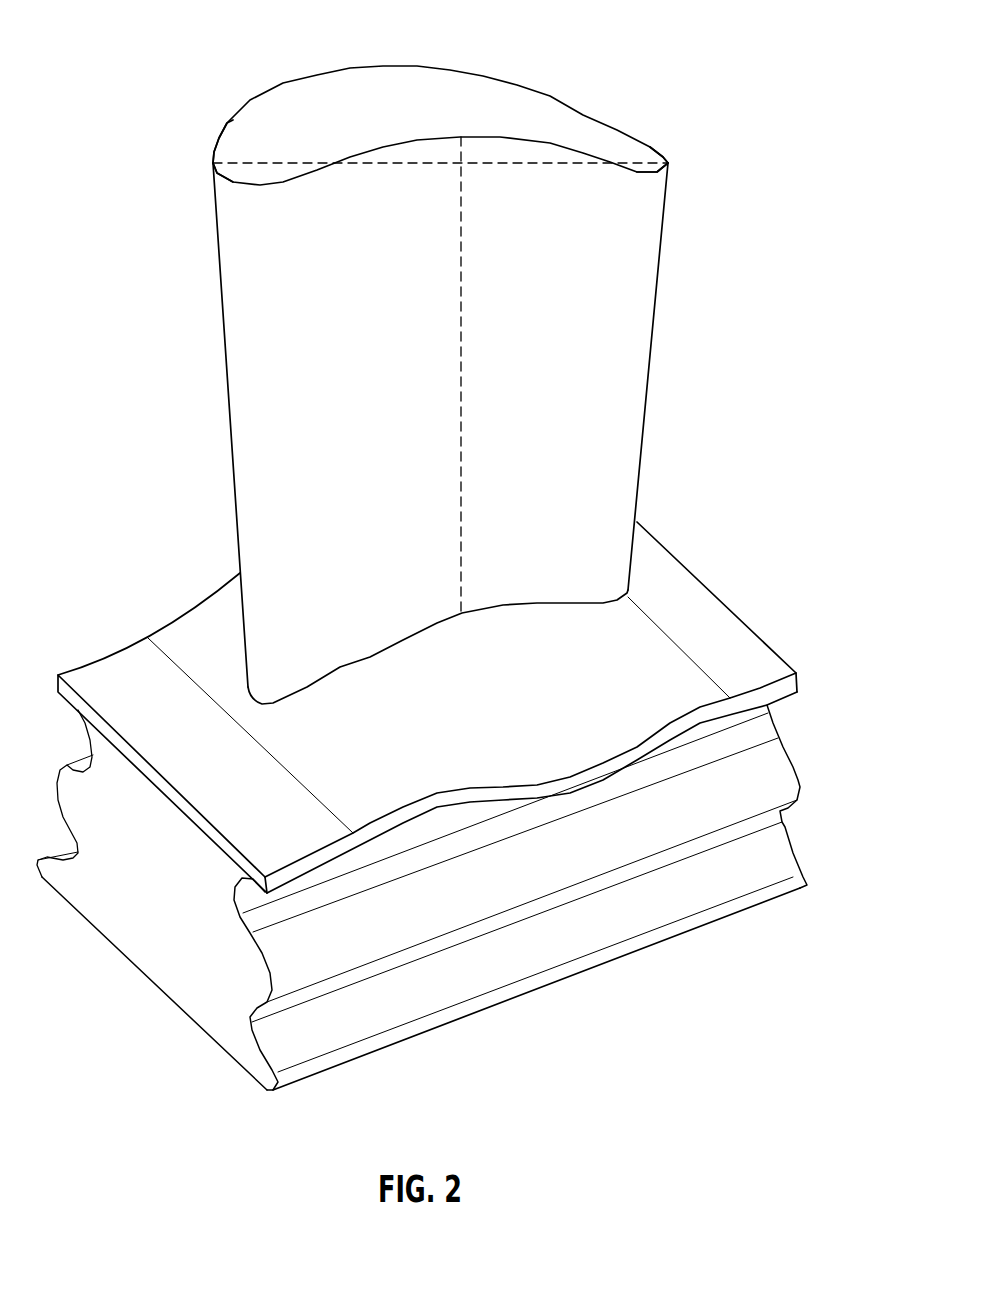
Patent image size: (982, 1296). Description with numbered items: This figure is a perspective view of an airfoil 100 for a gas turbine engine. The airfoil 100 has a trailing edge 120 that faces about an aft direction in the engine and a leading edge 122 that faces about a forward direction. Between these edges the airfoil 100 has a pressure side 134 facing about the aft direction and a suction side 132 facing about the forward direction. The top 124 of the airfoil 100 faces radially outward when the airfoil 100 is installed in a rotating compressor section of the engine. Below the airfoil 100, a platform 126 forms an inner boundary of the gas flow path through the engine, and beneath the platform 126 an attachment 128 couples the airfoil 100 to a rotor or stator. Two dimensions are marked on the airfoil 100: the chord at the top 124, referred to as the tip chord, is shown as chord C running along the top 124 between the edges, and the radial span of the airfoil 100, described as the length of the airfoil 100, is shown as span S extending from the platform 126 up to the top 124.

The airfoil 100 is at (437, 360).
The trailing edge 120 is at (650, 392).
The leading edge 122 is at (225, 358).
The top 124 is at (463, 85).
The platform 126 is at (720, 633).
The attachment 128 is at (801, 834).
The suction side 132 is at (237, 116).
The pressure side 134 is at (372, 152).
The chord C is at (440, 145).
The span S is at (471, 374).